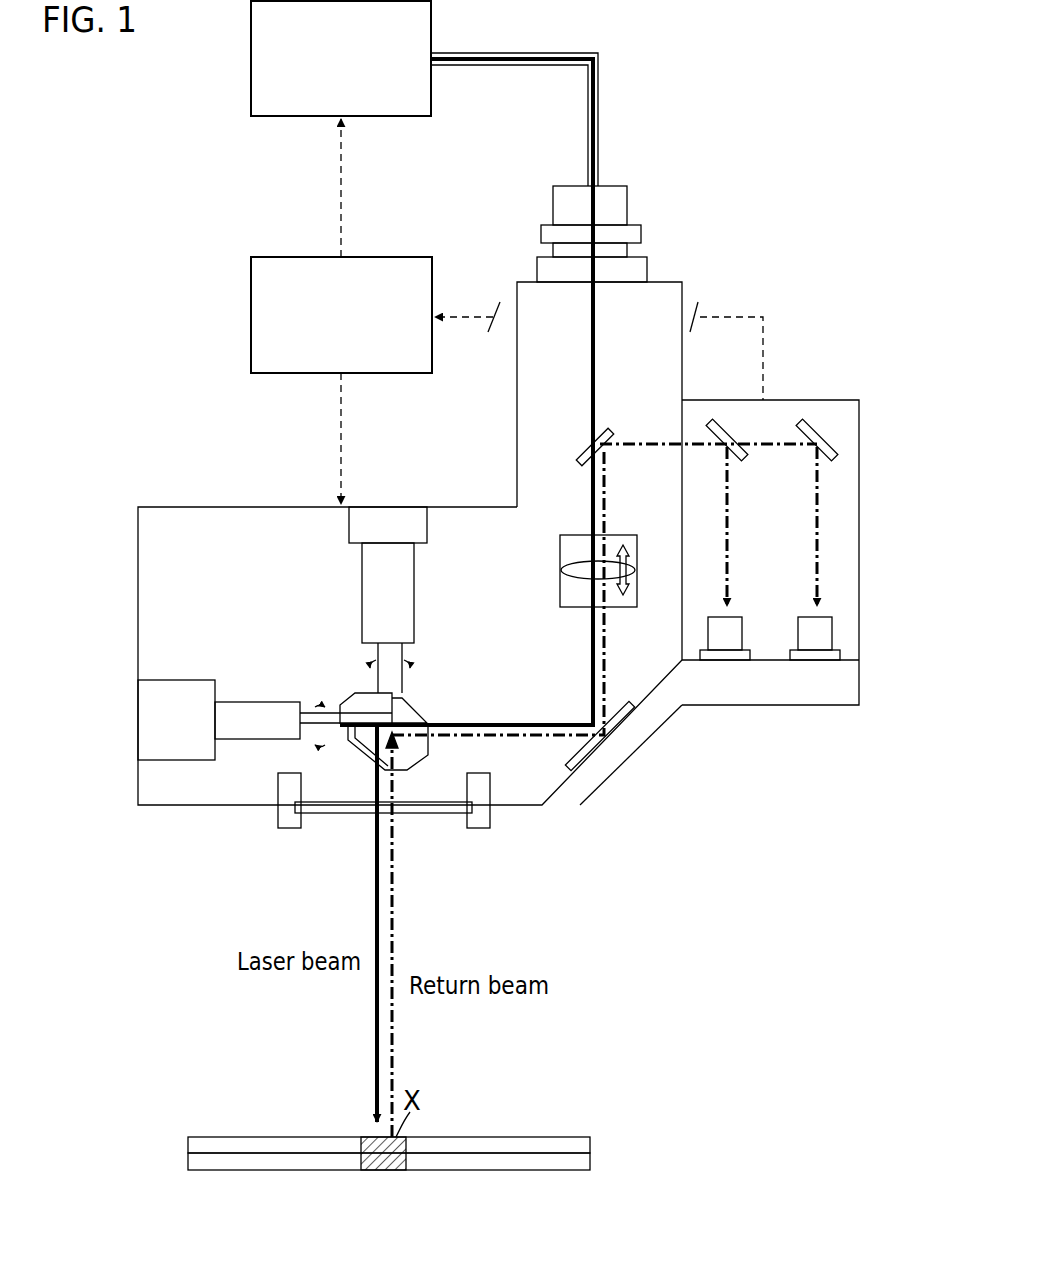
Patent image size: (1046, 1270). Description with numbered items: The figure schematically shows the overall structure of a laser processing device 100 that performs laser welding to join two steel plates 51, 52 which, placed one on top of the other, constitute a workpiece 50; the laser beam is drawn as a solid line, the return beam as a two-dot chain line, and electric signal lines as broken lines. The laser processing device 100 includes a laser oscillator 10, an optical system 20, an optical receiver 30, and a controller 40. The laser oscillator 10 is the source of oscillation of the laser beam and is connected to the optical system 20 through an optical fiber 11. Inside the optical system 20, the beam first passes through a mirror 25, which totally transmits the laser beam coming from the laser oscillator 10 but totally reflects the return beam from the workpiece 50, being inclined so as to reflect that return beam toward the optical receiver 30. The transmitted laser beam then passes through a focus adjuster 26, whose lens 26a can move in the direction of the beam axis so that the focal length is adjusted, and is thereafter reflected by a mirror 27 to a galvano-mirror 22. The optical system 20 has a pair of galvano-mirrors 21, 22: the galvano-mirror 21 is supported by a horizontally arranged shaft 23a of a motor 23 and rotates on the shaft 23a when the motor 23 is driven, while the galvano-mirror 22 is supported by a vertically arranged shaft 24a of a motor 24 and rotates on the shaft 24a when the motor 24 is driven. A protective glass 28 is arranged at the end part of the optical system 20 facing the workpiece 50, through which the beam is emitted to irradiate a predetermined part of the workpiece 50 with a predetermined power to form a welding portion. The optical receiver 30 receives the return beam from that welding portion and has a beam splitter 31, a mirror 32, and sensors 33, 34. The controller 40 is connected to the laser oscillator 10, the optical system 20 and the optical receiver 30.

The laser processing device 100 is at (163, 183).
The laser oscillator 10 is at (355, 76).
The optical fiber 11 is at (598, 122).
The optical system 20 is at (210, 507).
The galvano-mirror 21 is at (357, 692).
The galvano-mirror 22 is at (405, 715).
The motor 23 is at (257, 690).
The shaft 23a is at (310, 718).
The motor 24 is at (354, 577).
The shaft 24a is at (394, 658).
The mirror 25 is at (585, 455).
The focus adjuster 26 is at (555, 570).
The lens 26a is at (577, 583).
The mirror 27 is at (615, 725).
The protective glass 28 is at (440, 815).
The optical receiver 30 is at (835, 400).
The beam splitter 31 is at (712, 425).
The mirror 32 is at (800, 425).
The sensor 33 is at (725, 662).
The sensor 34 is at (815, 662).
The controller 40 is at (355, 336).
The workpiece 50 is at (452, 1150).
The steel plate 51 is at (590, 1140).
The steel plate 52 is at (590, 1160).